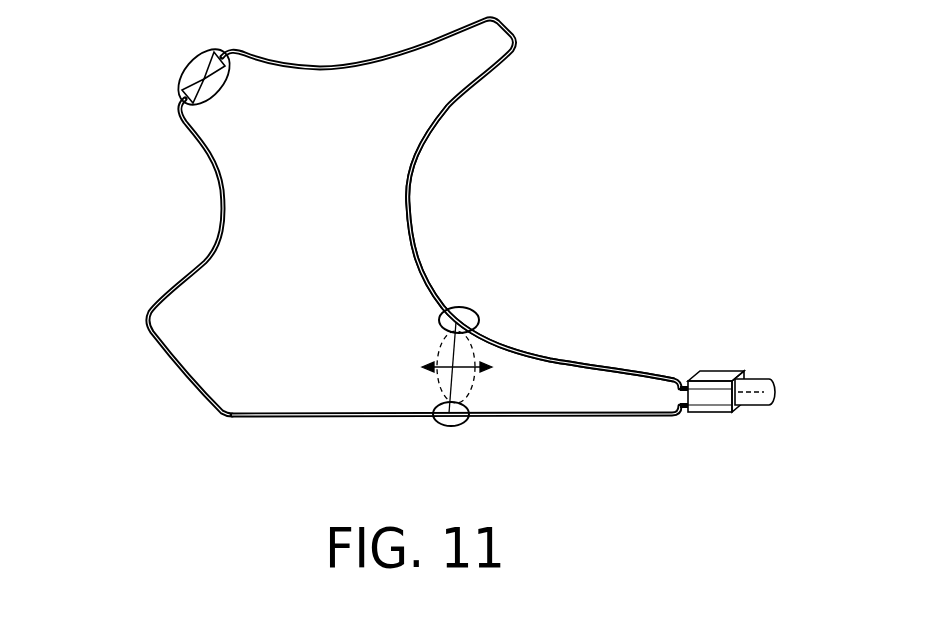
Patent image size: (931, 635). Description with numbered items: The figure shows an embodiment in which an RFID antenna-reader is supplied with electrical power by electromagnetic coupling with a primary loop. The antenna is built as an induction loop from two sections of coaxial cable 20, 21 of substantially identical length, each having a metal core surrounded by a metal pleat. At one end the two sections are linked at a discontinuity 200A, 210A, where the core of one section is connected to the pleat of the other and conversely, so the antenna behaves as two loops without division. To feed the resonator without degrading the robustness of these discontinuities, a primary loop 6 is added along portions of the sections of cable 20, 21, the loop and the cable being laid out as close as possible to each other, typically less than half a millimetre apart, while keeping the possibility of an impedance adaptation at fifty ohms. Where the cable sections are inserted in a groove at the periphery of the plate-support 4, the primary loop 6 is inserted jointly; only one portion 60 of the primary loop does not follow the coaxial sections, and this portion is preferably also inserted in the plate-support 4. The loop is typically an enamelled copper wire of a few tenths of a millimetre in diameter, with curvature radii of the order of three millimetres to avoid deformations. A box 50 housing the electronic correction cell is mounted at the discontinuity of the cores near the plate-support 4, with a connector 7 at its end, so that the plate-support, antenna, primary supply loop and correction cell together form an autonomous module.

The plate-support 4 is at (497, 37).
The section of coaxial cable 20 is at (420, 158).
The primary loop 6 is at (563, 358).
The section of coaxial cable 21 is at (232, 416).
The portion of the primary loop 60 is at (437, 342).
The box 50 is at (712, 377).
The connector 7 is at (752, 407).
The end of coaxial cable section 200A is at (138, 213).
The end of coaxial cable section 210A is at (203, 77).